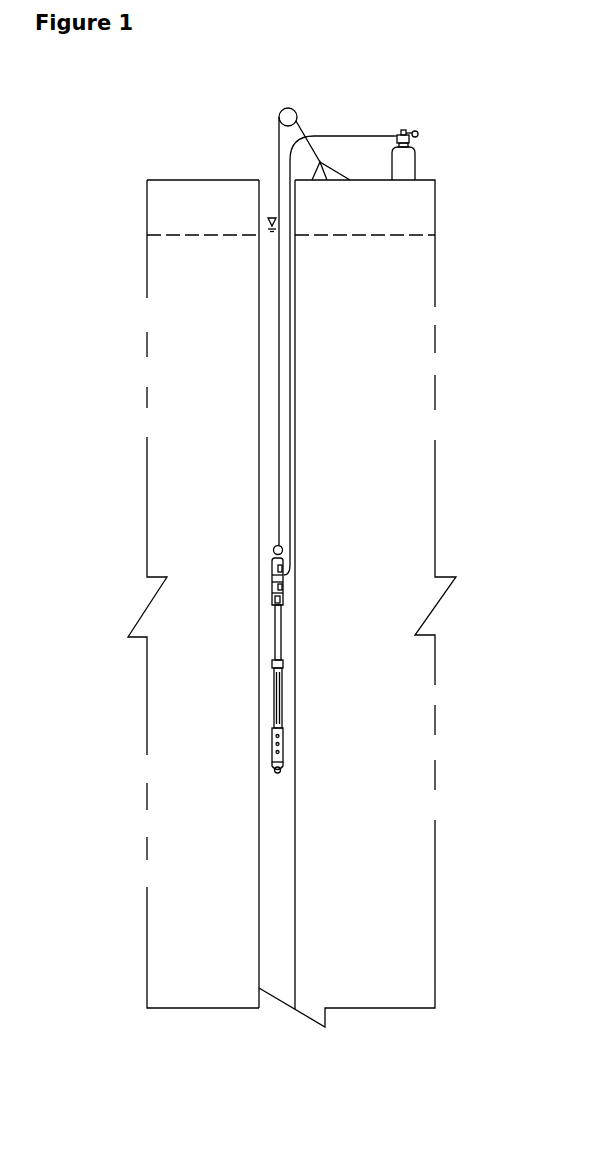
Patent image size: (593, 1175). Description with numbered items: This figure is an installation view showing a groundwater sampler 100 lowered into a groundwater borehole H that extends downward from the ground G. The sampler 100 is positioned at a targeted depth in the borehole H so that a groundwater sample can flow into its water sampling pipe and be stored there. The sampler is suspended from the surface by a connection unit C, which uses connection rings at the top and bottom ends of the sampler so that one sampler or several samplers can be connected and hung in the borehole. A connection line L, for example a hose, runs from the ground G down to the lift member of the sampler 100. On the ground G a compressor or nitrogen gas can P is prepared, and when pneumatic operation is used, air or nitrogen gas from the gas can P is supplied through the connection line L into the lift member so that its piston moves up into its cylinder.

The connection unit C is at (213, 326).
The connection line L is at (290, 352).
The groundwater borehole H is at (295, 407).
The ground G is at (293, 596).
The nitrogen gas can P is at (405, 162).
The groundwater sampler 100 is at (398, 660).